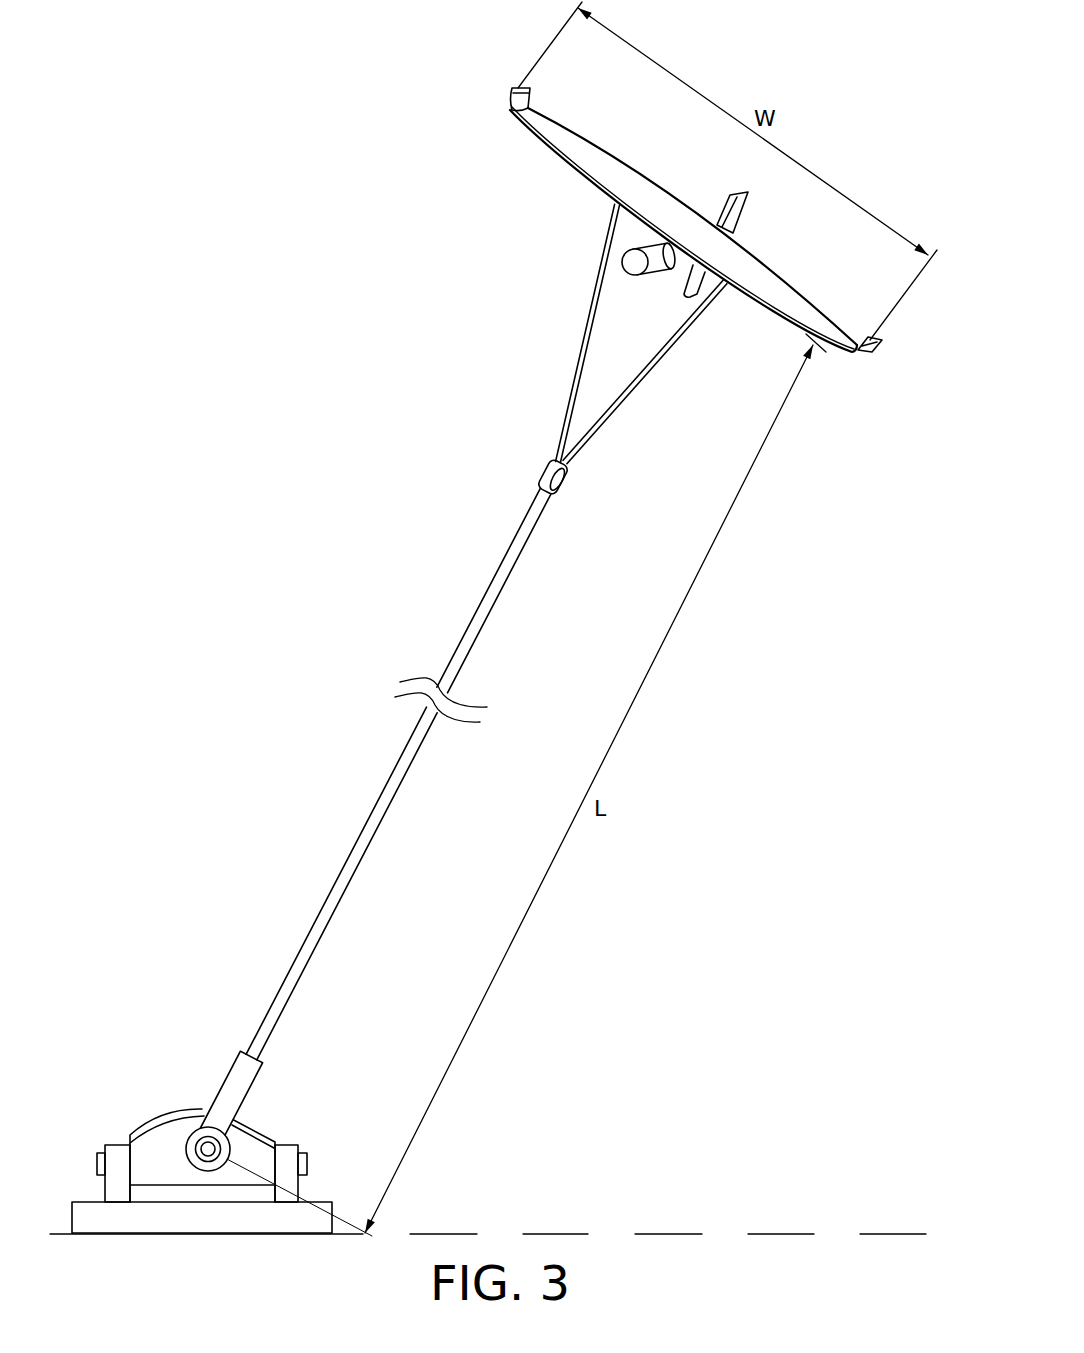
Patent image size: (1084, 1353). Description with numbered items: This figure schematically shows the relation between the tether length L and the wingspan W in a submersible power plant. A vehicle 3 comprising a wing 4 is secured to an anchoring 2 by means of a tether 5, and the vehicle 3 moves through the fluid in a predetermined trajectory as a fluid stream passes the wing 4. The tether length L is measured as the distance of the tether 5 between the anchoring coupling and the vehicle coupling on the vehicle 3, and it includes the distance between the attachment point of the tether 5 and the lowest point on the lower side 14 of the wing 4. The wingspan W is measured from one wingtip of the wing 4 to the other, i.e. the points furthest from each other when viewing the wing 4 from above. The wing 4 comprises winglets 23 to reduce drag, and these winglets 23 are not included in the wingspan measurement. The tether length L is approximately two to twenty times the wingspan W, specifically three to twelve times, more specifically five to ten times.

The anchoring 2 is at (165, 1220).
The vehicle 3 is at (843, 134).
The wing 4 is at (564, 140).
The tether 5 is at (488, 588).
The lower side of the wing 14 is at (576, 176).
The winglets 23 is at (510, 97).